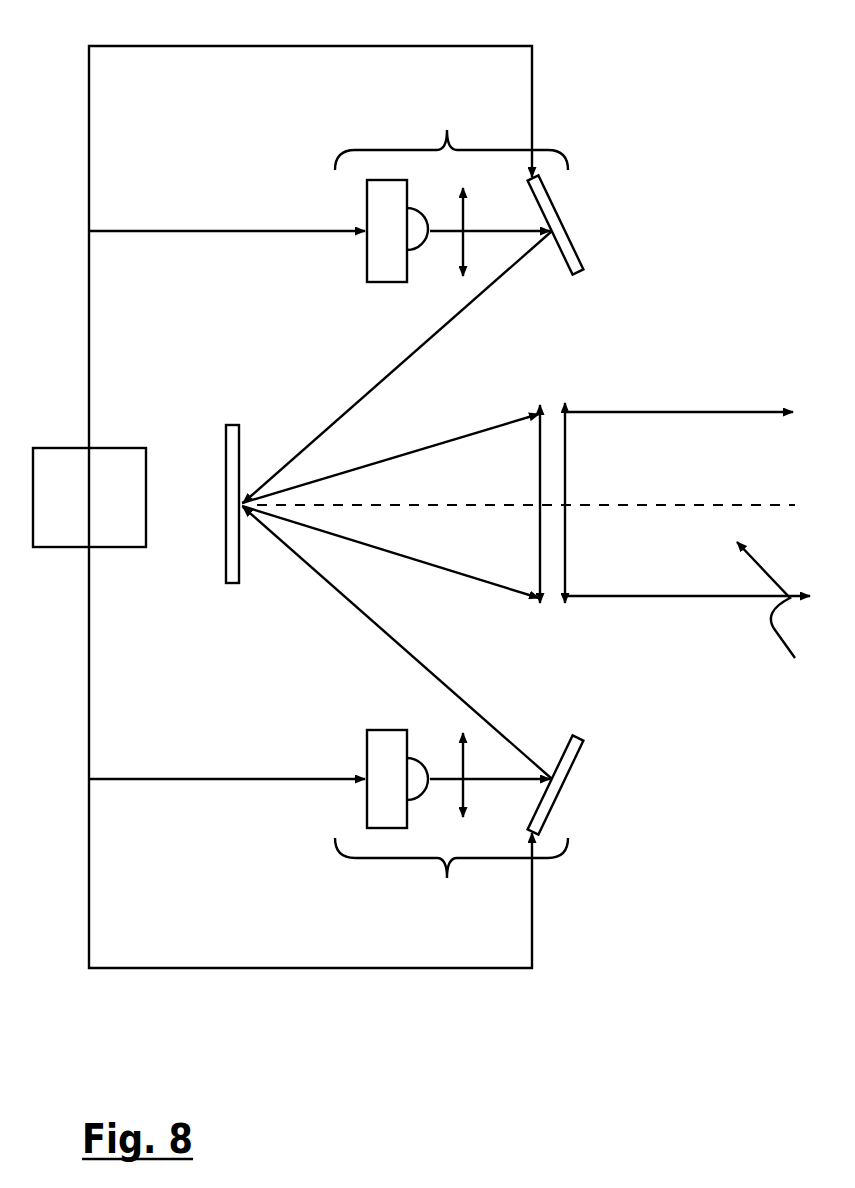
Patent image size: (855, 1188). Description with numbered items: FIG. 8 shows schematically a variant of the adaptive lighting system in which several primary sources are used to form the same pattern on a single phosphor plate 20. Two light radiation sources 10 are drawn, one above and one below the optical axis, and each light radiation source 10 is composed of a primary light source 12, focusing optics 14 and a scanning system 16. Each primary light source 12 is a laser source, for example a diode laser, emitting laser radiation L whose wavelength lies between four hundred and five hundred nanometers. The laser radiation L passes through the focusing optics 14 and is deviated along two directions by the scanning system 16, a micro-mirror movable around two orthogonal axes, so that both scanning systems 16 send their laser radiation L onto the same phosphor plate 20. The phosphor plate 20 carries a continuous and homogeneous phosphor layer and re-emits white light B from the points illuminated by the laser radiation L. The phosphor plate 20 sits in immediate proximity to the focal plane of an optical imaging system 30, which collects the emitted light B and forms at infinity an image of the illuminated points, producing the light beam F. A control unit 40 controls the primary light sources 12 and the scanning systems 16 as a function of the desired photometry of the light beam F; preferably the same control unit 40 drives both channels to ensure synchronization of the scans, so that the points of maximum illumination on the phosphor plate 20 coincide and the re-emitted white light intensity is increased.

The light radiation source 10 is at (456, 500).
The primary light source 12 is at (418, 226).
The focusing optics 14 is at (463, 278).
The scanning system 16 is at (550, 197).
The phosphor plate 20 is at (225, 542).
The optical imaging system 30 is at (560, 608).
The control unit 40 is at (146, 470).
The light emitted by the phosphor plate B is at (423, 545).
The laser radiation L is at (437, 327).
The light beam F is at (687, 555).